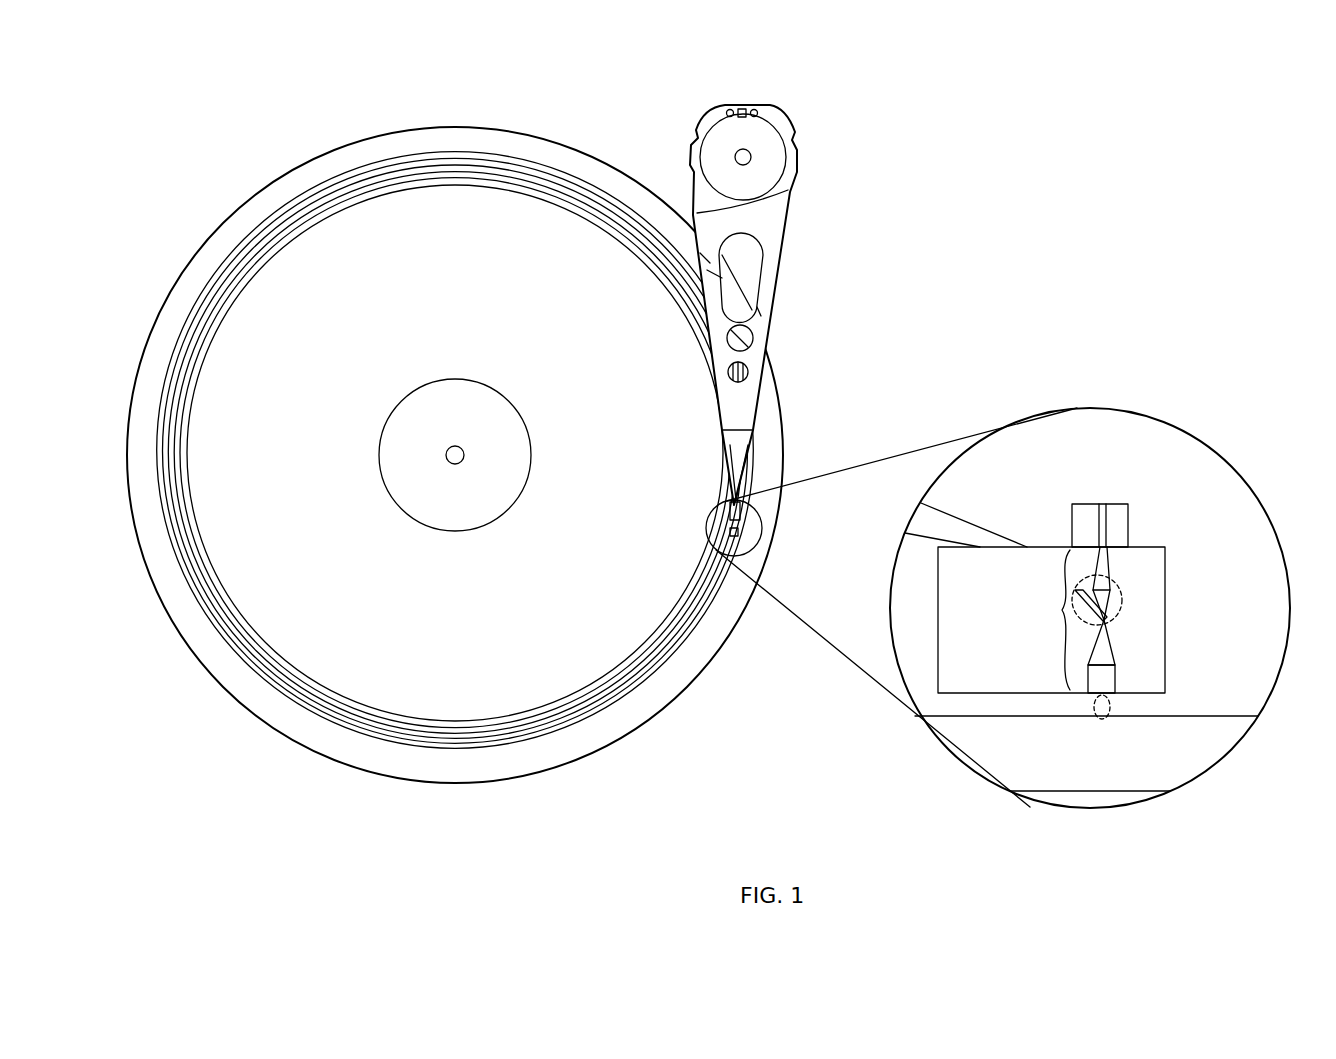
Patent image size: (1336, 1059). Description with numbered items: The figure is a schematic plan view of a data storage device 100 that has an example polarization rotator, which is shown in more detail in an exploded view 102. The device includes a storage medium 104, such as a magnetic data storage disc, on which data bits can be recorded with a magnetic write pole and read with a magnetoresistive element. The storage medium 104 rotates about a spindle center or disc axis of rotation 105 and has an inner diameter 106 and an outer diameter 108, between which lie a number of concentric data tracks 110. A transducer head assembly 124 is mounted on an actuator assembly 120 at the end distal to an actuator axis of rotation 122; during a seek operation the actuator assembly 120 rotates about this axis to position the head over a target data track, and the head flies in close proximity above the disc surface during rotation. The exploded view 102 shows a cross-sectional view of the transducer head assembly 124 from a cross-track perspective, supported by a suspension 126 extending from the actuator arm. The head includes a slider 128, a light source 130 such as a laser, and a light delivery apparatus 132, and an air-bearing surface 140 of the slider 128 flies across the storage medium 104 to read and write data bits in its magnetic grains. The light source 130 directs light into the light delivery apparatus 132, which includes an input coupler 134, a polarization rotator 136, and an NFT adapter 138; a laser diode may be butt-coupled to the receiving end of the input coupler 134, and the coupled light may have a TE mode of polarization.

The data storage device 100 is at (190, 96).
The exploded view 102 is at (1090, 408).
The storage medium 104 is at (527, 133).
The disc axis of rotation 105 is at (449, 452).
The inner diameter 106 is at (420, 383).
The outer diameter 108 is at (335, 177).
The data tracks 110 is at (638, 688).
The actuator assembly 120 is at (815, 240).
The actuator axis of rotation 122 is at (751, 150).
The transducer head assembly 124 is at (760, 522).
The suspension 126 is at (725, 462).
The slider 128 is at (960, 642).
The light source 130 is at (1083, 504).
The light delivery apparatus 132 is at (1028, 614).
The input coupler 134 is at (1108, 558).
The polarization rotator 136 is at (1122, 600).
The NFT adapter 138 is at (1110, 640).
The air-bearing surface 140 is at (960, 695).